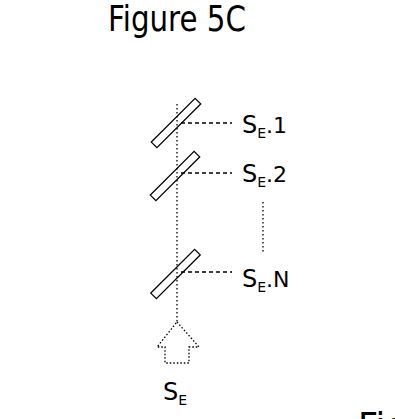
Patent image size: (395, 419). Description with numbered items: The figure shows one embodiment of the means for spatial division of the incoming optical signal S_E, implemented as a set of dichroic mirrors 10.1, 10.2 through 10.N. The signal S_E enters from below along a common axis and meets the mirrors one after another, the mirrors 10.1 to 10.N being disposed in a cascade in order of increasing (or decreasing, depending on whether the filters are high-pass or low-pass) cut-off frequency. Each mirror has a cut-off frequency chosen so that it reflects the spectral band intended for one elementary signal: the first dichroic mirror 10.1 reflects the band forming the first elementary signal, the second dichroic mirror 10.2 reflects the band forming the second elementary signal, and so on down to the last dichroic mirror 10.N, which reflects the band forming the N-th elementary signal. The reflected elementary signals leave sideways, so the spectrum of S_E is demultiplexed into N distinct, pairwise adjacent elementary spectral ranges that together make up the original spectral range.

The dichroic mirror 10.1 is at (131, 122).
The dichroic mirror 10.2 is at (131, 175).
The dichroic mirror 10.N is at (131, 273).